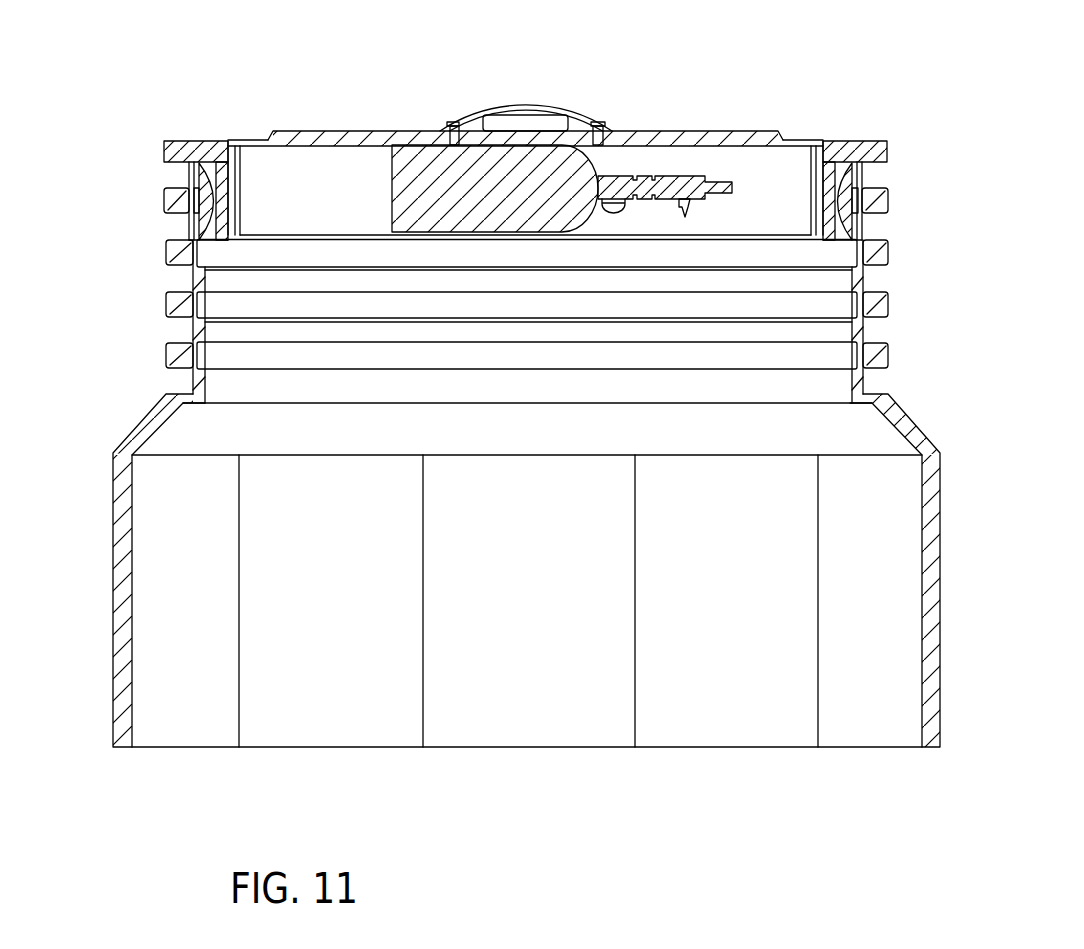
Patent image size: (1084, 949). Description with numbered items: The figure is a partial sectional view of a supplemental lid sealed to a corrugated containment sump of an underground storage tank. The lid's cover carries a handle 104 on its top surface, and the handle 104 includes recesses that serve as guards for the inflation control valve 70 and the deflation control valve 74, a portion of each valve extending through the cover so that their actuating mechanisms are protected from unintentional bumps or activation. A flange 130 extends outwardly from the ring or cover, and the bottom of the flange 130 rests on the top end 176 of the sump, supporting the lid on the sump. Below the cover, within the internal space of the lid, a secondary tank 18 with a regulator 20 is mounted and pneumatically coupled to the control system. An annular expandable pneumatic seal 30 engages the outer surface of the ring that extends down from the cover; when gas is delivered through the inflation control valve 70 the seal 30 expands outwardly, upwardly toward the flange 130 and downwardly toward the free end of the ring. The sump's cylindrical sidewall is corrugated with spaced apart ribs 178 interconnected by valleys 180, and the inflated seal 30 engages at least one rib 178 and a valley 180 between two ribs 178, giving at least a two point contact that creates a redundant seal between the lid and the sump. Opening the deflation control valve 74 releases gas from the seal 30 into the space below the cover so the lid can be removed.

The flange 130 is at (198, 143).
The top end of sump 176 is at (205, 163).
The pneumatic seal 30 is at (210, 198).
The ribs 178 is at (860, 158).
The valleys 180 is at (853, 197).
The secondary tank 18 is at (412, 158).
The regulator 20 is at (678, 183).
The handle 104 is at (527, 104).
The deflation control valve 74 is at (452, 122).
The inflation control valve 70 is at (602, 125).